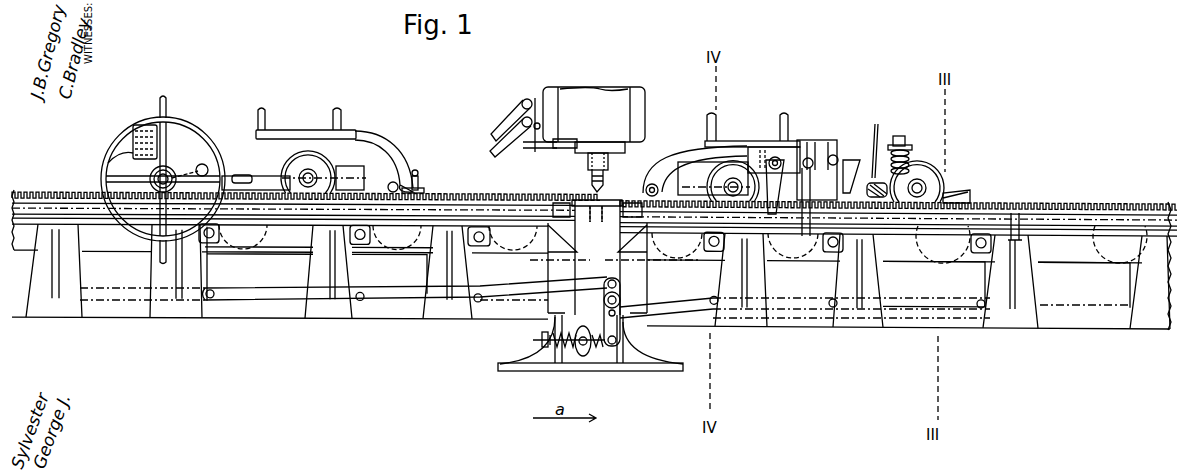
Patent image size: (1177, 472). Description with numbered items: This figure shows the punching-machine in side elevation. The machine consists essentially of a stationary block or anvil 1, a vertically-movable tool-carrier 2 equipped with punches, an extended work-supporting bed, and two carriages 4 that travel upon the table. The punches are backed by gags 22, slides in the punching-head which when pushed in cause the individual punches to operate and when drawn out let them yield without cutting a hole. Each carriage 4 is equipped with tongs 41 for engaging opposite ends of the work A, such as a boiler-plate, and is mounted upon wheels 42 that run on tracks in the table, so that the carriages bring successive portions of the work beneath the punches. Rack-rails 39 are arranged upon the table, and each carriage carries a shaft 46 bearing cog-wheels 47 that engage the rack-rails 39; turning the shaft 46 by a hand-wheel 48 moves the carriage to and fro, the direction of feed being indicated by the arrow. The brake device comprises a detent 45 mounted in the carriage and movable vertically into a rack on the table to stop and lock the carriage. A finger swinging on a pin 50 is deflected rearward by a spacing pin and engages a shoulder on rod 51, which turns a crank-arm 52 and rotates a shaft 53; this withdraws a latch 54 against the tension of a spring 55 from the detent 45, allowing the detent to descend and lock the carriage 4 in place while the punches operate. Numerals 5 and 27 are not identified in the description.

The anvil 1 is at (601, 362).
The tool-carrier 2 is at (615, 97).
The carriage 4 is at (541, 150).
The bed 5 is at (295, 208).
The gag 22 is at (585, 155).
The drill 27 is at (601, 187).
The rack-rail 39 is at (481, 205).
The tongs 41 is at (673, 152).
The wheel 42 is at (341, 148).
The detent 45 is at (800, 240).
The shaft 46 is at (880, 152).
The cog-wheel 47 is at (418, 186).
The hand-wheel 48 is at (195, 126).
The pin 50 is at (1015, 230).
The rod 51 is at (247, 242).
The crank-arm 52 is at (365, 270).
The shaft 53 is at (387, 298).
The latch 54 is at (532, 340).
The spring 55 is at (903, 300).
The work A is at (460, 191).